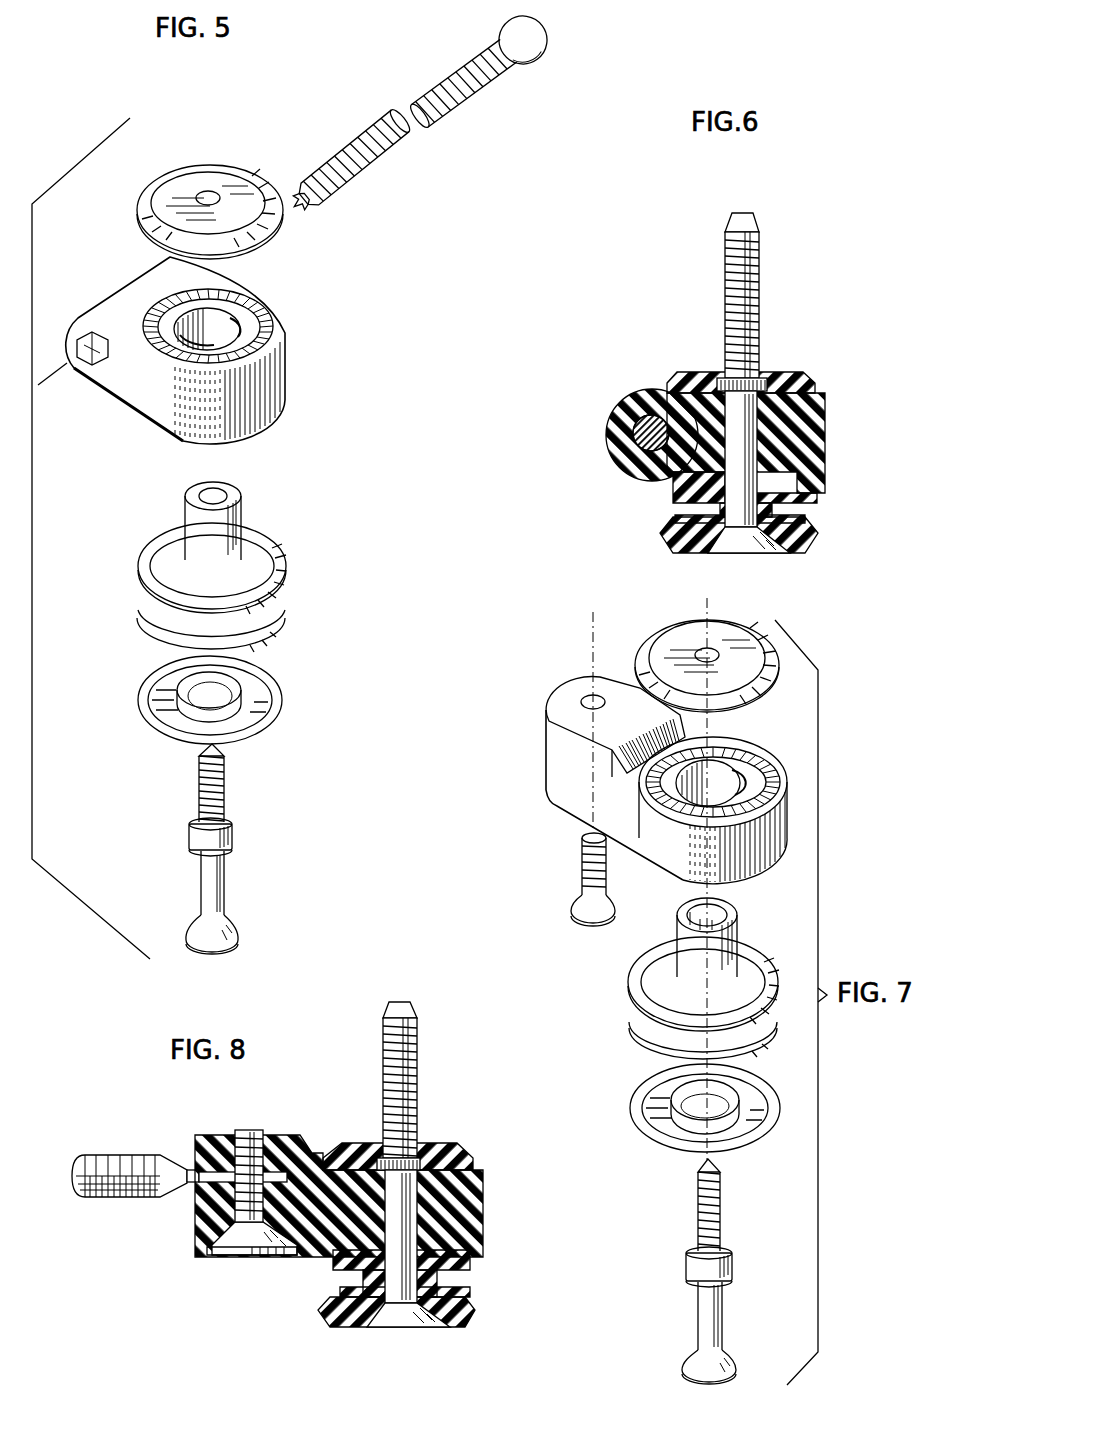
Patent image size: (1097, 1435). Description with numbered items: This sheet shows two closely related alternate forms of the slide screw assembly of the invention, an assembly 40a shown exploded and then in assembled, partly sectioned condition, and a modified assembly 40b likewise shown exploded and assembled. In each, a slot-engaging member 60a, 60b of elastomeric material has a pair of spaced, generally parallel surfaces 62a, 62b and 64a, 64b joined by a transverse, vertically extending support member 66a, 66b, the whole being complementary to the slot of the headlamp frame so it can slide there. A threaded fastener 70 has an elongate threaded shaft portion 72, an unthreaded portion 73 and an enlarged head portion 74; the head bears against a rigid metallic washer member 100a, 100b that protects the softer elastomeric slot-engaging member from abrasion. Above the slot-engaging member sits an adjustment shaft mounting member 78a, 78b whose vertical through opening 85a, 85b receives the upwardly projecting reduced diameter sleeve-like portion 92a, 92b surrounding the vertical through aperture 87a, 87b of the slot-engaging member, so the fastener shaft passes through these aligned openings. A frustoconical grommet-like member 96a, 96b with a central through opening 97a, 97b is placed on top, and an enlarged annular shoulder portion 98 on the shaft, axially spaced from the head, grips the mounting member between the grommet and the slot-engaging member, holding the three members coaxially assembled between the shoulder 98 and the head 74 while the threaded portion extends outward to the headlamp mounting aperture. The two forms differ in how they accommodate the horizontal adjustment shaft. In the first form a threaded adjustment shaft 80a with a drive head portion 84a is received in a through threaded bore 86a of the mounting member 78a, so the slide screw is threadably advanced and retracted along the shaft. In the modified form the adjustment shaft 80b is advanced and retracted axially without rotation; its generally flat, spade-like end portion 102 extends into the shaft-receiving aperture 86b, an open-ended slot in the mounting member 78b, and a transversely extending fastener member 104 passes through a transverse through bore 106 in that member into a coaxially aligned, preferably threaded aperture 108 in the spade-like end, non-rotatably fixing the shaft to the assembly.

In FIG. 5, the slide screw assembly 40a is at (206, 140).
In FIG. 7, the slide screw assembly 40b is at (600, 932).
In FIG. 8, the slide screw assembly 40b is at (198, 1108).
In FIG. 5, the slot-engaging member 60a is at (218, 598).
In FIG. 6, the slot-engaging member 60a is at (727, 512).
In FIG. 7, the slot-engaging member 60b is at (669, 998).
In FIG. 8, the slot-engaging member 60b is at (384, 1289).
In FIG. 5, the parallel surface 62a is at (286, 578).
In FIG. 6, the parallel surface 62a is at (804, 498).
In FIG. 7, the parallel surface 62b is at (703, 984).
In FIG. 8, the parallel surface 62b is at (447, 1270).
In FIG. 5, the parallel surface 64a is at (284, 599).
In FIG. 6, the parallel surface 64a is at (800, 515).
In FIG. 7, the parallel surface 64b is at (703, 1040).
In FIG. 8, the parallel surface 64b is at (457, 1290).
In FIG. 6, the support member 66a is at (720, 508).
In FIG. 8, the support member 66b is at (362, 1282).
In FIG. 5, the threaded fastener 70 is at (223, 849).
In FIG. 6, the threaded fastener 70 is at (774, 376).
In FIG. 7, the threaded fastener 70 is at (712, 1271).
In FIG. 8, the threaded fastener 70 is at (427, 1161).
In FIG. 5, the threaded shaft portion 72 is at (216, 783).
In FIG. 6, the threaded shaft portion 72 is at (730, 258).
In FIG. 7, the threaded shaft portion 72 is at (715, 1196).
In FIG. 8, the threaded shaft portion 72 is at (386, 1052).
In FIG. 5, the unthreaded shaft portion 73 is at (201, 865).
In FIG. 6, the unthreaded shaft portion 73 is at (741, 459).
In FIG. 7, the unthreaded shaft portion 73 is at (722, 1289).
In FIG. 8, the unthreaded shaft portion 73 is at (412, 1200).
In FIG. 5, the enlarged head portion 74 is at (237, 930).
In FIG. 6, the enlarged head portion 74 is at (750, 554).
In FIG. 7, the enlarged head portion 74 is at (725, 1359).
In FIG. 8, the enlarged head portion 74 is at (400, 1328).
In FIG. 5, the adjustment shaft mounting member 78a is at (204, 350).
In FIG. 6, the adjustment shaft mounting member 78a is at (650, 392).
In FIG. 7, the adjustment shaft mounting member 78b is at (639, 761).
In FIG. 8, the adjustment shaft mounting member 78b is at (319, 1190).
In FIG. 5, the adjustment shaft 80a is at (420, 124).
In FIG. 6, the adjustment shaft 80a is at (618, 432).
In FIG. 8, the adjustment shaft 80b is at (93, 1198).
In FIG. 5, the drive head portion 84a is at (301, 202).
In FIG. 5, the through opening 85a is at (230, 318).
In FIG. 7, the through opening 85b is at (732, 770).
In FIG. 5, the threaded bore 86a is at (95, 370).
In FIG. 6, the threaded bore 86a is at (636, 428).
In FIG. 8, the shaft-receiving aperture 86b is at (190, 1170).
In FIG. 5, the through aperture 87a is at (220, 494).
In FIG. 7, the through aperture 87b is at (720, 915).
In FIG. 5, the sleeve-like portion 92a is at (255, 505).
In FIG. 7, the sleeve-like portion 92b is at (741, 930).
In FIG. 5, the grommet-like member 96a is at (175, 201).
In FIG. 6, the grommet-like member 96a is at (812, 376).
In FIG. 7, the grommet-like member 96b is at (692, 648).
In FIG. 8, the grommet-like member 96b is at (452, 1142).
In FIG. 5, the central through opening 97a is at (204, 195).
In FIG. 7, the central through opening 97b is at (707, 650).
In FIG. 5, the annular shoulder portion 98 is at (232, 819).
In FIG. 6, the annular shoulder portion 98 is at (762, 378).
In FIG. 7, the annular shoulder portion 98 is at (691, 1261).
In FIG. 8, the annular shoulder portion 98 is at (401, 1160).
In FIG. 5, the washer member 100a is at (282, 698).
In FIG. 6, the washer member 100a is at (672, 550).
In FIG. 7, the washer member 100b is at (633, 1100).
In FIG. 8, the washer member 100b is at (320, 1325).
In FIG. 8, the shaft end portion 102 is at (215, 1188).
In FIG. 7, the transverse fastener member 104 is at (583, 870).
In FIG. 8, the transverse fastener member 104 is at (247, 1128).
In FIG. 7, the transverse through bore 106 is at (588, 698).
In FIG. 8, the threaded aperture 108 is at (223, 1203).